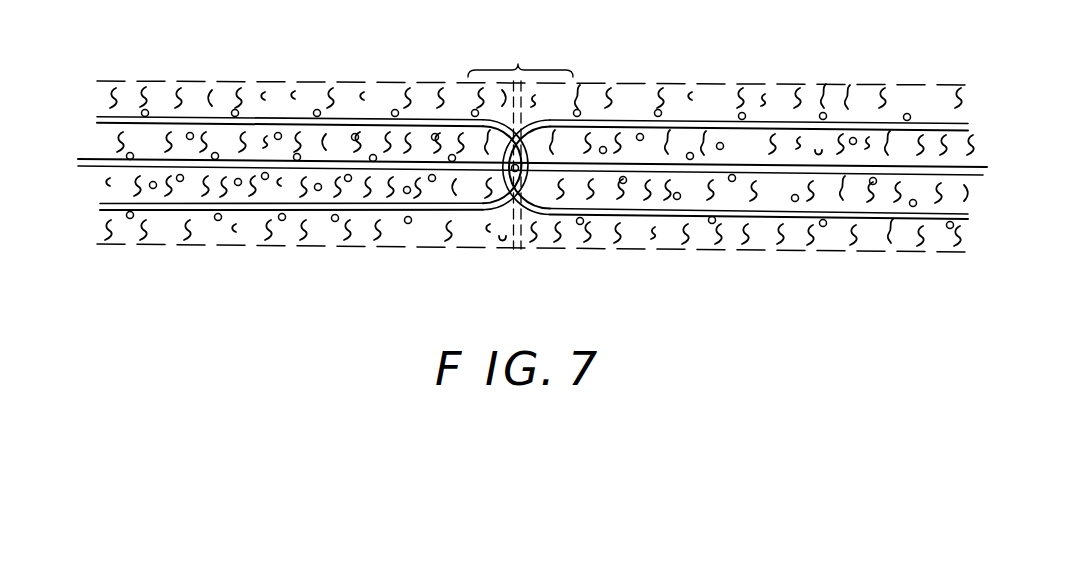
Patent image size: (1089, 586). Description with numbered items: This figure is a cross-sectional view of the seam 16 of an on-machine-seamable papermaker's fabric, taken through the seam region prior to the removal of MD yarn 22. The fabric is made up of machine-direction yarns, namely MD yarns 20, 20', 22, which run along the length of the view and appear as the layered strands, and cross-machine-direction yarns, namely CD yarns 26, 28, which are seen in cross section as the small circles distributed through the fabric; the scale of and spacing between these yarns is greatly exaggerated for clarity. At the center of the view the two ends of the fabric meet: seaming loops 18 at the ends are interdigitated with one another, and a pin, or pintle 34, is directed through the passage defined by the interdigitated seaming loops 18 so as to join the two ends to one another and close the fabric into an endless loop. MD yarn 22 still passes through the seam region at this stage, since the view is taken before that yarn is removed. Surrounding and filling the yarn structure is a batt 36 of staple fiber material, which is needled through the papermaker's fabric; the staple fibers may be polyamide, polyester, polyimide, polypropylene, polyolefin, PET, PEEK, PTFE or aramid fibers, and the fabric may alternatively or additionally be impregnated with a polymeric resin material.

The seam 16 is at (520, 137).
The seaming loops 18 is at (501, 232).
The MD yarn 20 is at (519, 121).
The MD yarn 20' is at (531, 228).
The MD yarn 22 is at (78, 162).
The CD yarn 26 is at (318, 110).
The CD yarn 28 is at (283, 217).
The pintle 34 is at (523, 178).
The batt 36 is at (255, 92).